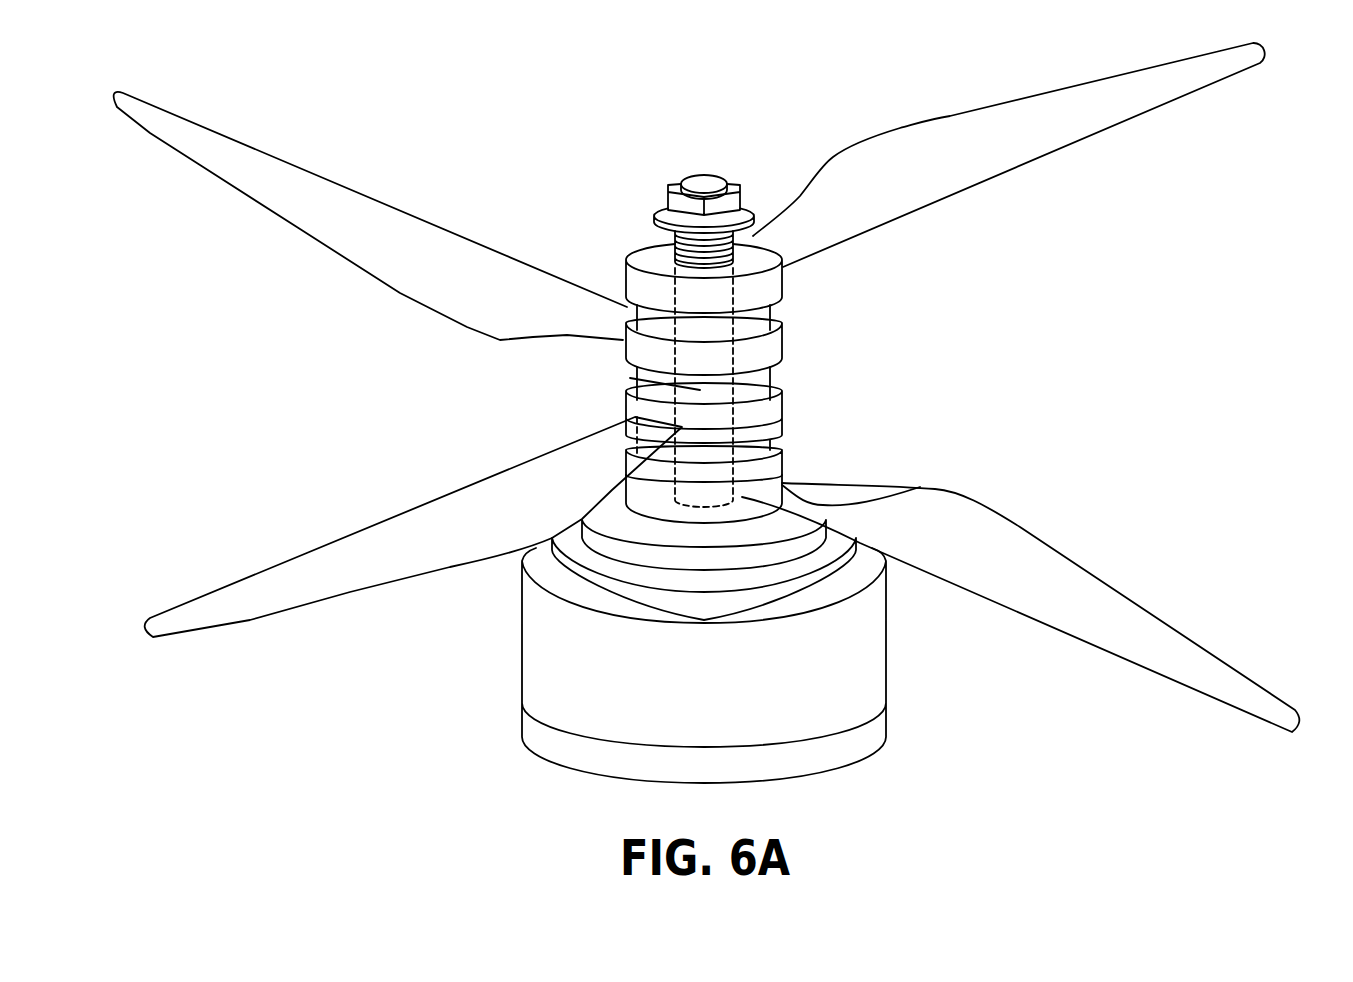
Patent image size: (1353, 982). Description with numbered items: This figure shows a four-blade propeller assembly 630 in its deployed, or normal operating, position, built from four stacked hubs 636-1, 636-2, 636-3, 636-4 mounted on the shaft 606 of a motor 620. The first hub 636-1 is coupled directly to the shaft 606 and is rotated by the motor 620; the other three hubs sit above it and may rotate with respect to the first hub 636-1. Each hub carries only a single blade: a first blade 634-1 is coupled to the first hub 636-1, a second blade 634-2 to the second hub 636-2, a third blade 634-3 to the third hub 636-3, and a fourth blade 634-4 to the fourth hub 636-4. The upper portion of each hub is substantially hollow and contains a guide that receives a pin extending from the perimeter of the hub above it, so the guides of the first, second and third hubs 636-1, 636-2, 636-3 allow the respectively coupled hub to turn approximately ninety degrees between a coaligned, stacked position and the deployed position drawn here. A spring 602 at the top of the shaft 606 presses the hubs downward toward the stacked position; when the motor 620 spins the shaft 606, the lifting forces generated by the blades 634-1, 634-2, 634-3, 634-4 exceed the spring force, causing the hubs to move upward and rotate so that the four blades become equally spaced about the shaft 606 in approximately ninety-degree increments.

The propeller assembly 630 is at (832, 64).
The spring 602 is at (633, 230).
The shaft 606 is at (630, 378).
The motor 620 is at (863, 670).
The first blade 634-1 is at (1135, 620).
The second blade 634-2 is at (292, 590).
The third blade 634-3 is at (327, 207).
The fourth blade 634-4 is at (1012, 153).
The first hub 636-1 is at (783, 473).
The second hub 636-2 is at (783, 418).
The third hub 636-3 is at (783, 350).
The fourth hub 636-4 is at (783, 283).